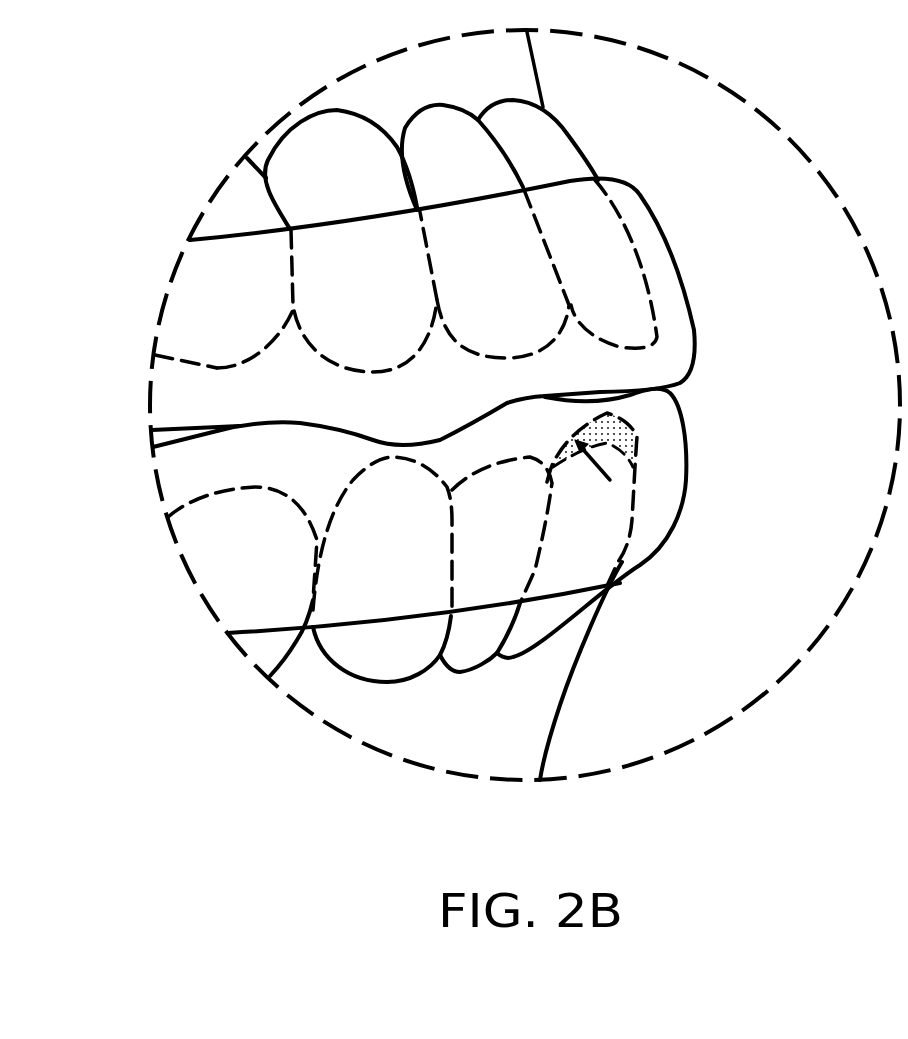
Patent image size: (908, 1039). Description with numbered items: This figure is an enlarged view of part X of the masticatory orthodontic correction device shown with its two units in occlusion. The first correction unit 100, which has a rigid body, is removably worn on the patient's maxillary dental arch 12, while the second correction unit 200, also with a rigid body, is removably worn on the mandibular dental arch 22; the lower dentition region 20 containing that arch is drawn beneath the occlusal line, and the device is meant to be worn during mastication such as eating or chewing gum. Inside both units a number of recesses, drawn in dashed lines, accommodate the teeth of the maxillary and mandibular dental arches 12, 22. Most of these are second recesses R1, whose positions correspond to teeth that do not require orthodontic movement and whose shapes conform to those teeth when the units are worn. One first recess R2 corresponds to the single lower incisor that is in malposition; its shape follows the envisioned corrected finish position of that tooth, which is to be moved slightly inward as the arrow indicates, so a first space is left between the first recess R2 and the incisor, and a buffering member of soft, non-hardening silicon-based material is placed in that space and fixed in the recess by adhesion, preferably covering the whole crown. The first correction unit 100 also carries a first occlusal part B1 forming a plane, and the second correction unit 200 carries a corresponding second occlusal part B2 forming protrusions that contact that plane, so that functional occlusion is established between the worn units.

The part X is at (165, 39).
The maxillary dental arch 12 is at (572, 137).
The second recesses R1 is at (373, 370).
The first correction unit 100 is at (697, 320).
The first occlusal part B1 is at (180, 431).
The second occlusal part B2 is at (168, 448).
The second correction unit 200 is at (687, 468).
The lower jaw 20 is at (497, 742).
The mandibular dental arch 22 is at (388, 683).
The first recess R2 is at (620, 412).